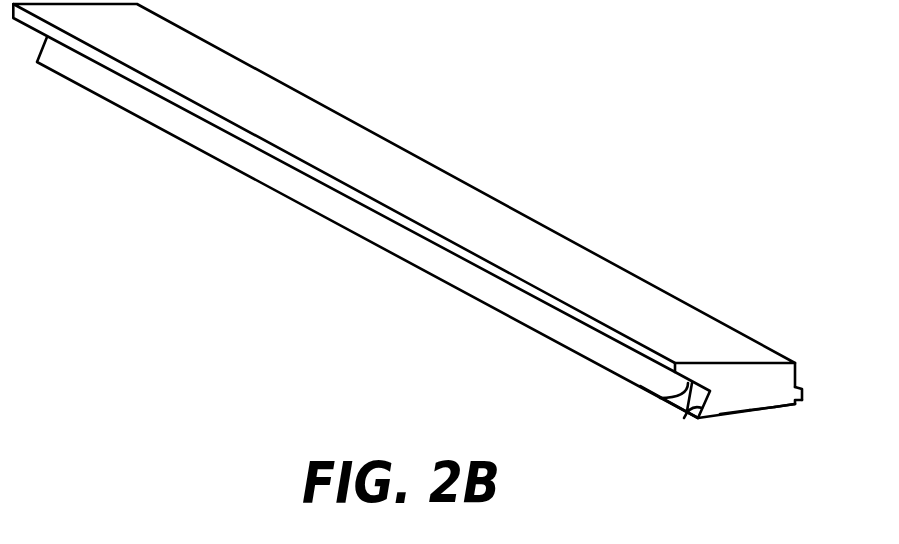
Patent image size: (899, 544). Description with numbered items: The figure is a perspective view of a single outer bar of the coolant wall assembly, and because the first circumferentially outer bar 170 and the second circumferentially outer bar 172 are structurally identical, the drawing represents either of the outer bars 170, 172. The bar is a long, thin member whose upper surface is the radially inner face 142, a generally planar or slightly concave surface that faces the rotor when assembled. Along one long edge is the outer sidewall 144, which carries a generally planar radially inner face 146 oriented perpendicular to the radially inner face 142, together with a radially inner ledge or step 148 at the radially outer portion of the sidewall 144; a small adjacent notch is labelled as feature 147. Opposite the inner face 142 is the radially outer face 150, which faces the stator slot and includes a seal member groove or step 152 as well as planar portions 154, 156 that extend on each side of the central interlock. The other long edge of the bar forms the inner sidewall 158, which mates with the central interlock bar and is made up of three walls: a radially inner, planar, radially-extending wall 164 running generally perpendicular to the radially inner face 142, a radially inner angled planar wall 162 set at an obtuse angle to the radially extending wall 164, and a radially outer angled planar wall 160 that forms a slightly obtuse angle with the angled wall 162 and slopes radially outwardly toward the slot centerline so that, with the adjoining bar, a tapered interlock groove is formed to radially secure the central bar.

The radially inner face 142 is at (375, 145).
The outer sidewall 144 is at (841, 426).
The radially inner face of sidewall 146 is at (797, 363).
The notch 147 is at (803, 397).
The ledge or step 148 is at (799, 388).
The radially outer face 150 is at (753, 416).
The seal member groove or step 152 is at (798, 401).
The planar portion 154 is at (770, 406).
The planar portion 156 is at (717, 412).
The inner sidewall 158 is at (666, 414).
The radially outer angled planar wall 160 is at (687, 410).
The radially inner angled planar wall 162 is at (660, 398).
The radially extending wall 164 is at (245, 142).
The first circumferentially outer bar 170 is at (615, 205).
The second circumferentially outer bar 172 is at (446, 261).